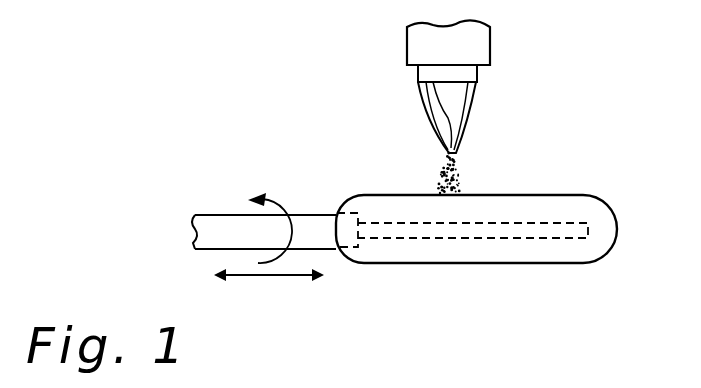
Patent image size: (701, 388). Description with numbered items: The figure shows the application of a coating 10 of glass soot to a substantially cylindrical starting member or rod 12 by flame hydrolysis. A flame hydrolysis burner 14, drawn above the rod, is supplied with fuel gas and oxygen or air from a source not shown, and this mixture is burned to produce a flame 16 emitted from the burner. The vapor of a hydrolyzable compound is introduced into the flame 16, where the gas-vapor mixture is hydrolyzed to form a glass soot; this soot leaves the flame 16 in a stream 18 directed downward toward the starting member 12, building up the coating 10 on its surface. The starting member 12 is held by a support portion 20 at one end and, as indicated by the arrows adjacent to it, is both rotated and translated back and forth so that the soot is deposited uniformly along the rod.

The coating 10 is at (578, 203).
The starting member 12 is at (443, 232).
The flame hydrolysis burner 14 is at (476, 47).
The flame 16 is at (467, 112).
The stream 18 is at (455, 178).
The support portion 20 is at (218, 225).